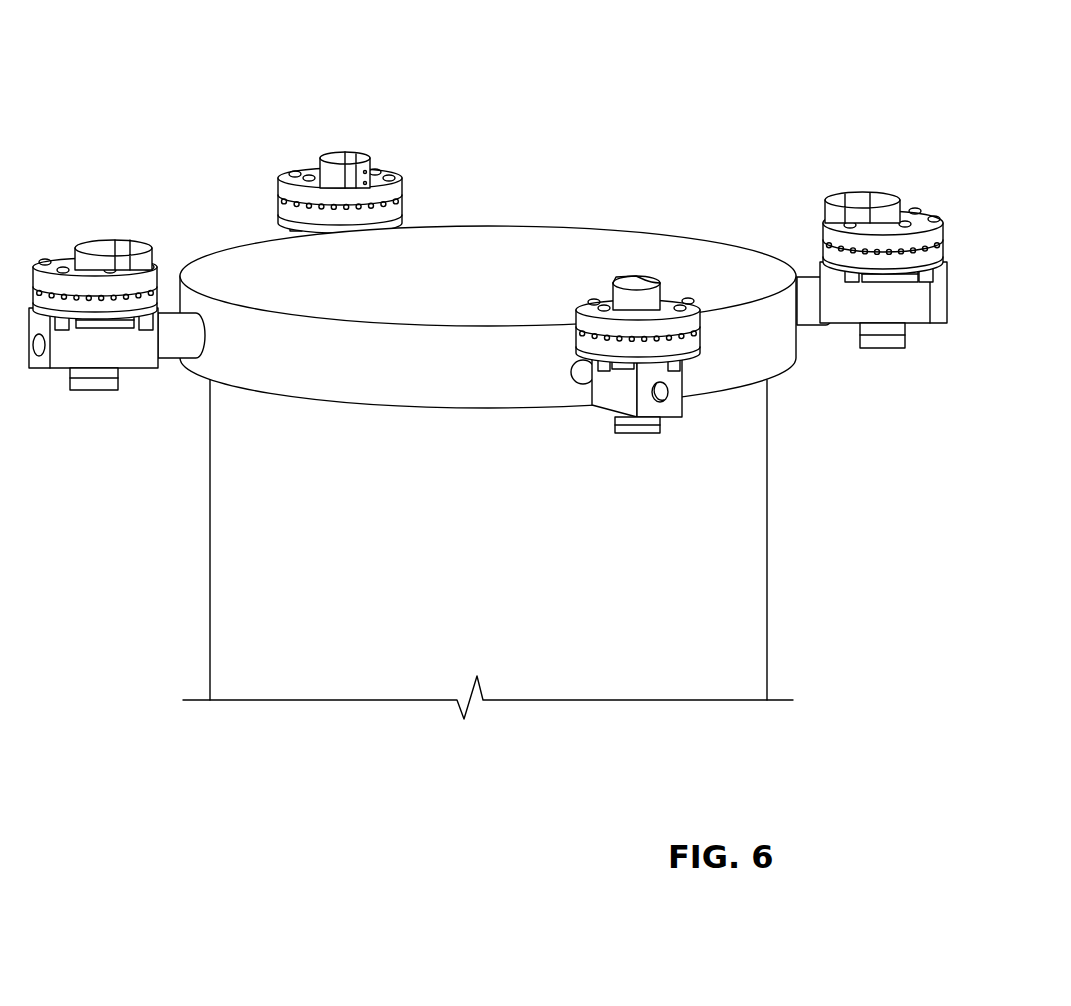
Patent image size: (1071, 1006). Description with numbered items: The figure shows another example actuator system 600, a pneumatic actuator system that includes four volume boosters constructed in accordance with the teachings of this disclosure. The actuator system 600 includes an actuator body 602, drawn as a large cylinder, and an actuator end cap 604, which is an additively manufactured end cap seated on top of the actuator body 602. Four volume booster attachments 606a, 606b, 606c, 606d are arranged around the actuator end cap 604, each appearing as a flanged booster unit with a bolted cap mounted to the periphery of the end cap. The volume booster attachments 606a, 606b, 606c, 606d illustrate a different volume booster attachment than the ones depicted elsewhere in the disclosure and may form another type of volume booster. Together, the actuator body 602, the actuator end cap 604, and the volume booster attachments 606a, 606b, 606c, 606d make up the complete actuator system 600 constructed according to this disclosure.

The actuator system 600 is at (184, 38).
The actuator body 602 is at (768, 589).
The actuator end cap 604 is at (531, 229).
The volume booster attachment 606a is at (94, 213).
The volume booster attachment 606b is at (881, 179).
The volume booster attachment 606c is at (378, 139).
The volume booster attachment 606d is at (646, 270).